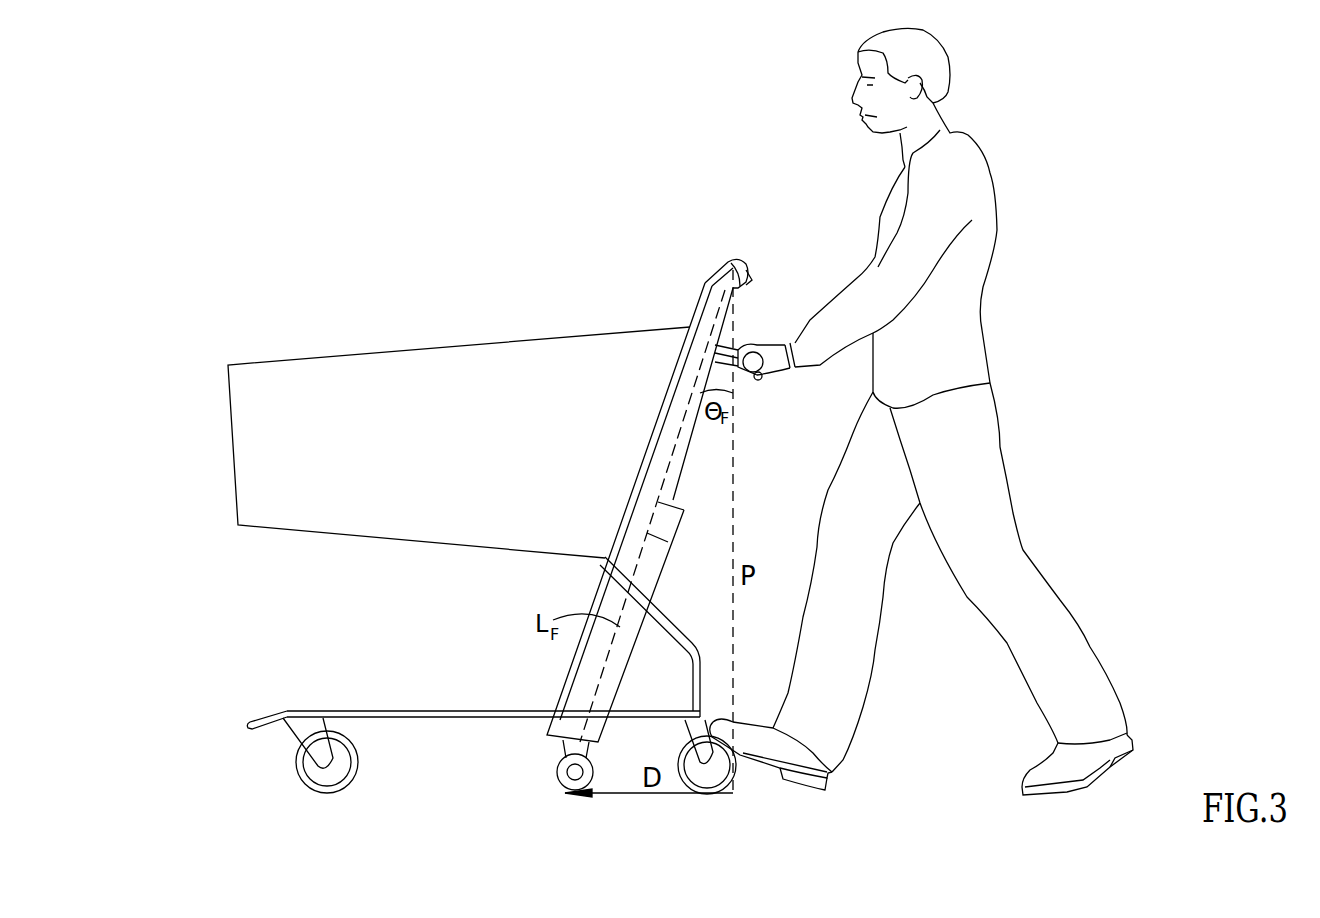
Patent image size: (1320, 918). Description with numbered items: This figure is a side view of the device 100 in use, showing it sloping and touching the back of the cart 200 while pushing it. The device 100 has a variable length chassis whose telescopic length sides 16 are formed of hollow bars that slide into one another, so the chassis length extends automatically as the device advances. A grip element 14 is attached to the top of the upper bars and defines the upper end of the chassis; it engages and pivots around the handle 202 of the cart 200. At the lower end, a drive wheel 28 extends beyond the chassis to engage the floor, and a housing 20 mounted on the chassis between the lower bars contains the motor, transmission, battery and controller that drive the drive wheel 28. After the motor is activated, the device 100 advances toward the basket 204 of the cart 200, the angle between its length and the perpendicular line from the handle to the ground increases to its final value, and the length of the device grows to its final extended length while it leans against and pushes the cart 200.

The cart 200 is at (280, 228).
The basket 204 is at (455, 336).
The device 100 is at (724, 508).
The length sides 16 is at (665, 455).
The handle 202 is at (728, 262).
The grip element 14 is at (747, 283).
The housing 20 is at (657, 582).
The drive wheel 28 is at (553, 772).